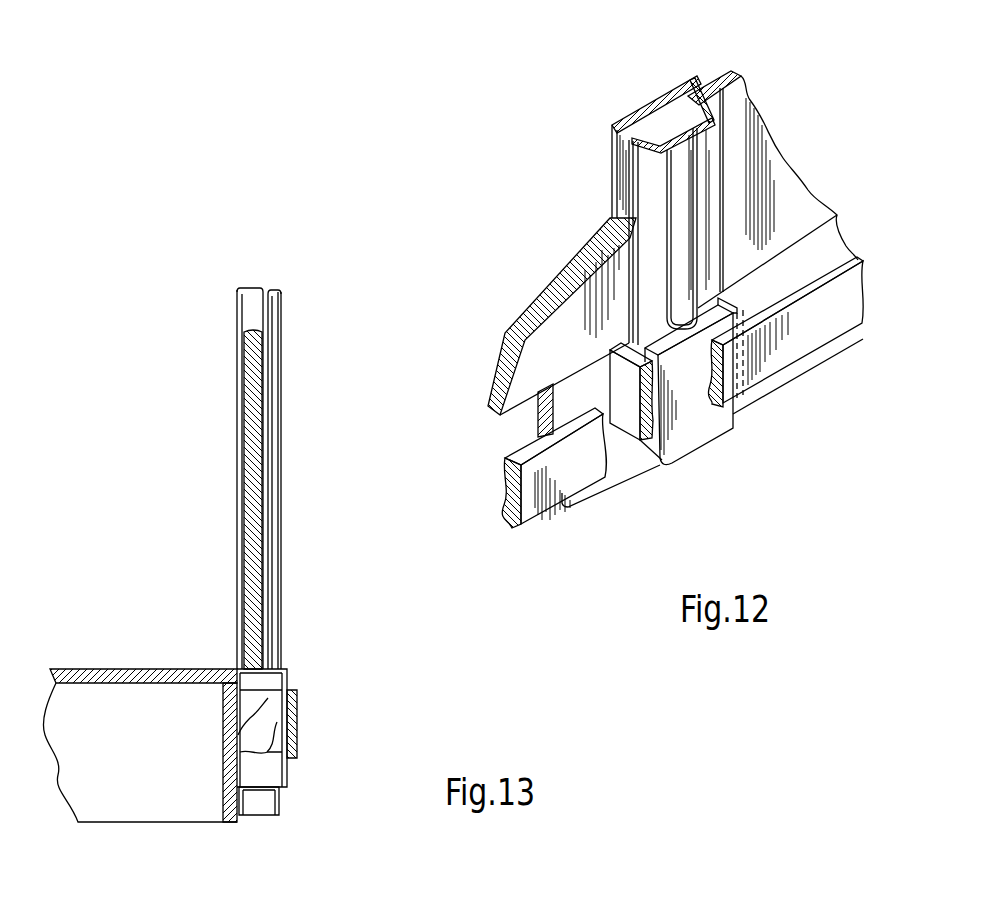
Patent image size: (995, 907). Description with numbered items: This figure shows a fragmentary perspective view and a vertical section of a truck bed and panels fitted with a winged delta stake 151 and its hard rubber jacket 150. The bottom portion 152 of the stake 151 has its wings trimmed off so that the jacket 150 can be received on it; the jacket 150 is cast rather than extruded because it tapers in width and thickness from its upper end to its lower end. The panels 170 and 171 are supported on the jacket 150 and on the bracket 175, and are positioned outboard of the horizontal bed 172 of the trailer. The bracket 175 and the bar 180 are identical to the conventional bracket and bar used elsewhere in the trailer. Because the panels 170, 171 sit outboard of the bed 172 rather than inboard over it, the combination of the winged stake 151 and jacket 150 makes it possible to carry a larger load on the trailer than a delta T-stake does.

In FIG. 12, the hard rubber jacket 150 is at (718, 451).
In FIG. 13, the hard rubber jacket 150 is at (288, 762).
In FIG. 12, the winged delta stake 151 is at (650, 85).
In FIG. 13, the winged delta stake 151 is at (292, 573).
In FIG. 13, the bottom portion 152 is at (270, 803).
In FIG. 12, the panel 170 is at (575, 310).
In FIG. 13, the panel 170 is at (250, 440).
In FIG. 12, the panel 171 is at (775, 165).
In FIG. 13, the horizontal bed 172 is at (125, 668).
In FIG. 12, the bracket 175 is at (622, 413).
In FIG. 13, the bracket 175 is at (258, 698).
In FIG. 12, the bar 180 is at (823, 327).
In FIG. 13, the bar 180 is at (297, 727).